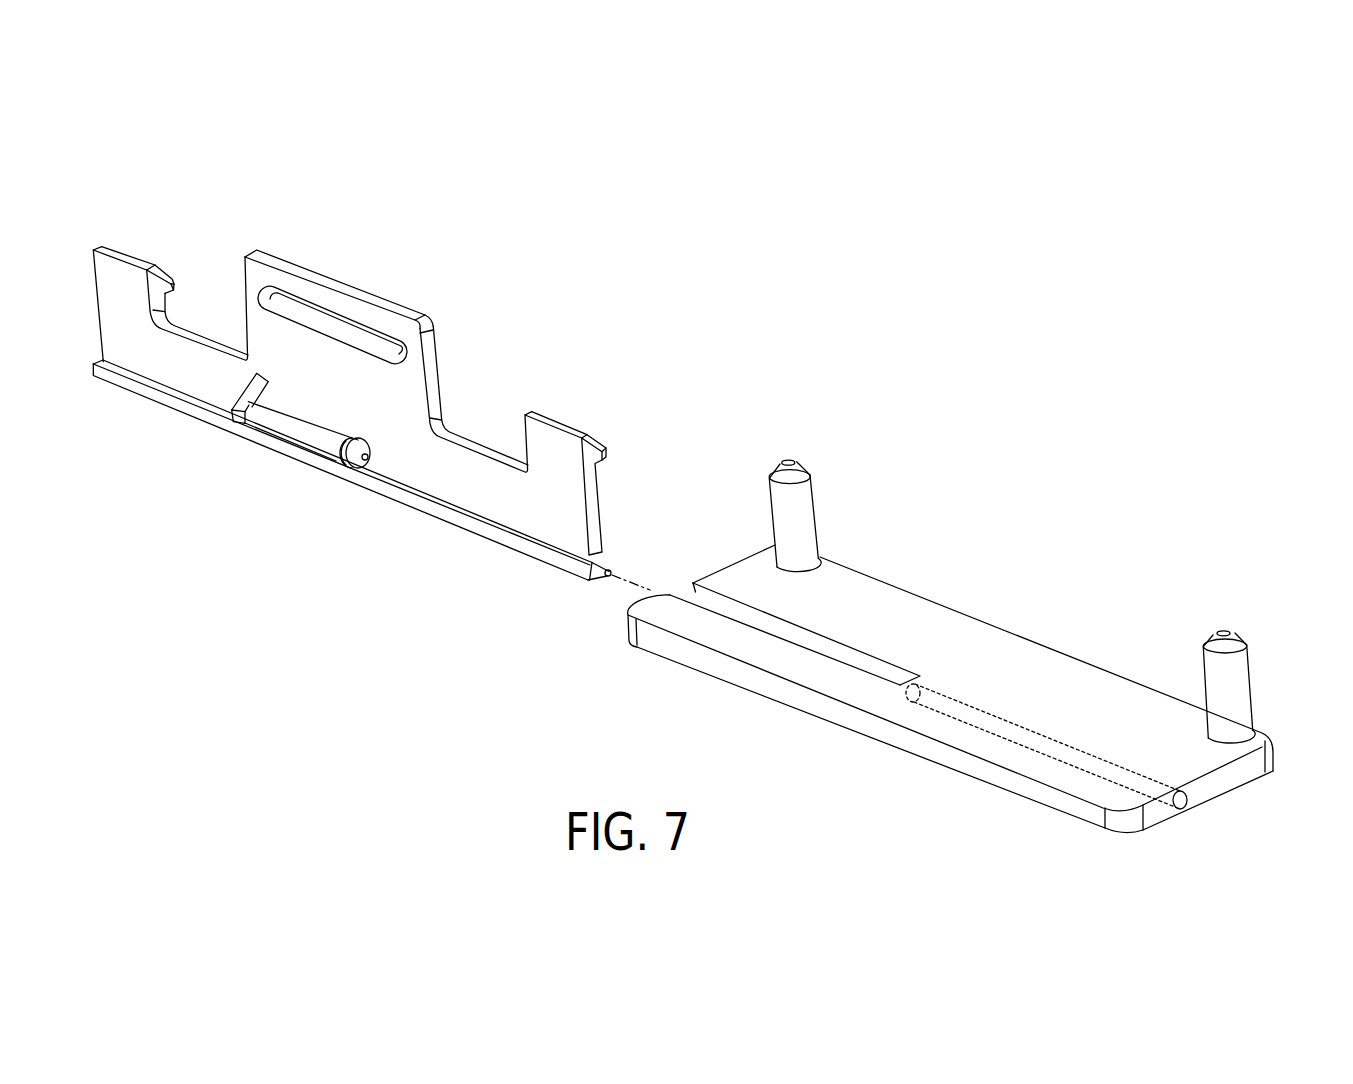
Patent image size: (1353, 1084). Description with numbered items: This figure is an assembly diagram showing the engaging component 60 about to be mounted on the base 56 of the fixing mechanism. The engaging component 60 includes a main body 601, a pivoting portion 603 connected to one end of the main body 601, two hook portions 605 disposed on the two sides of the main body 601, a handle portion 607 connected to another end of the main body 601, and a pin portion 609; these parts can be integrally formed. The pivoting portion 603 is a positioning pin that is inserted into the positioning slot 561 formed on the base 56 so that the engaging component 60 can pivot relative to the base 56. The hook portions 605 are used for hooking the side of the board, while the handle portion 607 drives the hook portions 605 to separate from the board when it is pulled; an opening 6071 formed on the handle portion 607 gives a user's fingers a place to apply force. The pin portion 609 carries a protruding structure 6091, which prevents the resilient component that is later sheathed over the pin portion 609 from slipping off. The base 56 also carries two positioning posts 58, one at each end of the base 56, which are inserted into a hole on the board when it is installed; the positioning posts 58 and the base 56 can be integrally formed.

The engaging component 60 is at (490, 247).
The main body 601 is at (478, 473).
The pivoting portion 603 is at (497, 535).
The hook portion 605 is at (122, 248).
The handle portion 607 is at (397, 318).
The opening 6071 is at (313, 309).
The pin portion 609 is at (272, 420).
The protruding structure 6091 is at (354, 467).
The base 56 is at (1020, 535).
The positioning slot 561 is at (1023, 737).
The positioning post 58 is at (800, 505).